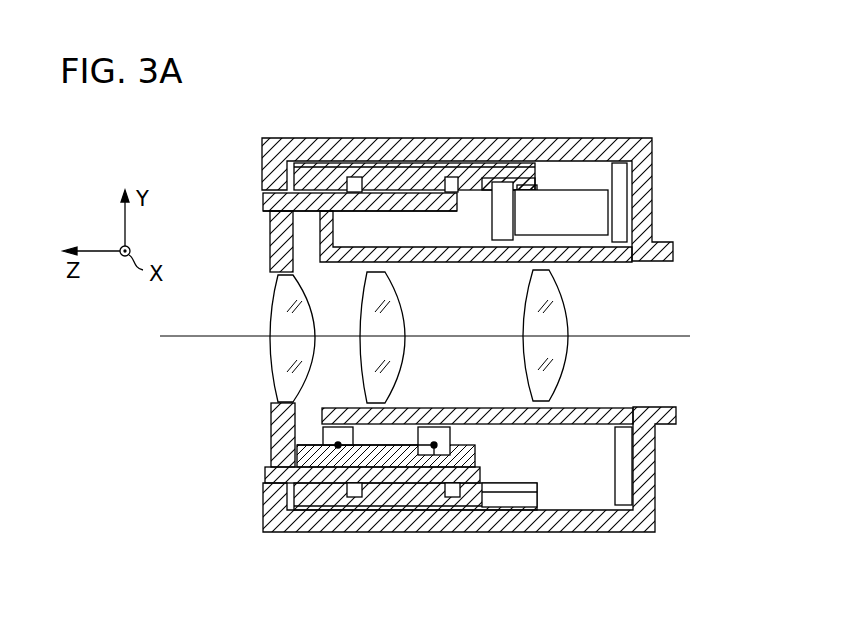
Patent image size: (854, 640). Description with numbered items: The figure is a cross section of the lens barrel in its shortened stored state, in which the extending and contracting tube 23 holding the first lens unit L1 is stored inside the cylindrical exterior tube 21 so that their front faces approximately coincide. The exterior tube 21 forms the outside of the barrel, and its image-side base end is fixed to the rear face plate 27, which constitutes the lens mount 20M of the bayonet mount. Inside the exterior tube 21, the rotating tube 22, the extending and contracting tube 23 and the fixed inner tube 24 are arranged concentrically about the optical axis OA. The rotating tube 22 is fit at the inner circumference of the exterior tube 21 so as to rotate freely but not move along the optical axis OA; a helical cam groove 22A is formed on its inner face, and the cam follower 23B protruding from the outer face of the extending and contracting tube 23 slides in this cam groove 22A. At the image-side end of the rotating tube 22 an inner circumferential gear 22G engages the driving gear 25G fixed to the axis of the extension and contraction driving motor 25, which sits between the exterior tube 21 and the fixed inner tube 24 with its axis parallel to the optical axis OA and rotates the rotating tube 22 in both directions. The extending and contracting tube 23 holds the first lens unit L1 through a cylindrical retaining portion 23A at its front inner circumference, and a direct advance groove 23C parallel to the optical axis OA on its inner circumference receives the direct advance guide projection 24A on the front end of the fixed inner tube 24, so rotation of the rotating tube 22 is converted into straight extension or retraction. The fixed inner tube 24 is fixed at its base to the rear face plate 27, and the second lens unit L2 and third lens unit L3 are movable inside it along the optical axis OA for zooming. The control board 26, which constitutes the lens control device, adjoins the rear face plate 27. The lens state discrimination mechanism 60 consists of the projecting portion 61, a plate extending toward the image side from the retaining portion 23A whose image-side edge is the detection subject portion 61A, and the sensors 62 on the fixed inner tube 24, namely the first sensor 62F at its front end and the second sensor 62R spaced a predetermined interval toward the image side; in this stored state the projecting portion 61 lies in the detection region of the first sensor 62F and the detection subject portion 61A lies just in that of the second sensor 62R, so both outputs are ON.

The lens mount 20M is at (508, 163).
The exterior tube 21 is at (277, 128).
The rotating tube 22 is at (460, 164).
The cam groove 22A is at (345, 176).
The inner circumferential gear 22G is at (530, 193).
The extending and contracting tube 23 is at (363, 185).
The retaining portion 23A is at (268, 250).
The cam follower 23B is at (482, 178).
The direct advance groove 23C is at (412, 213).
The fixed inner tube 24 is at (476, 260).
The direct advance guide projection 24A is at (333, 228).
The extension and contraction driving motor 25 is at (593, 178).
The driving gear 25G is at (503, 192).
The control board 26 is at (623, 490).
The rear face plate 27 is at (653, 178).
The first lens unit L1 is at (280, 306).
The second lens unit L2 is at (368, 375).
The third lens unit L3 is at (530, 362).
The optical axis OA is at (233, 342).
The lens state discrimination mechanism 60 is at (417, 533).
The projecting portion 61 is at (417, 527).
The detection subject portion 61A is at (440, 462).
The sensors 62 is at (375, 518).
The first sensor 62F is at (338, 448).
The second sensor 62R is at (418, 442).